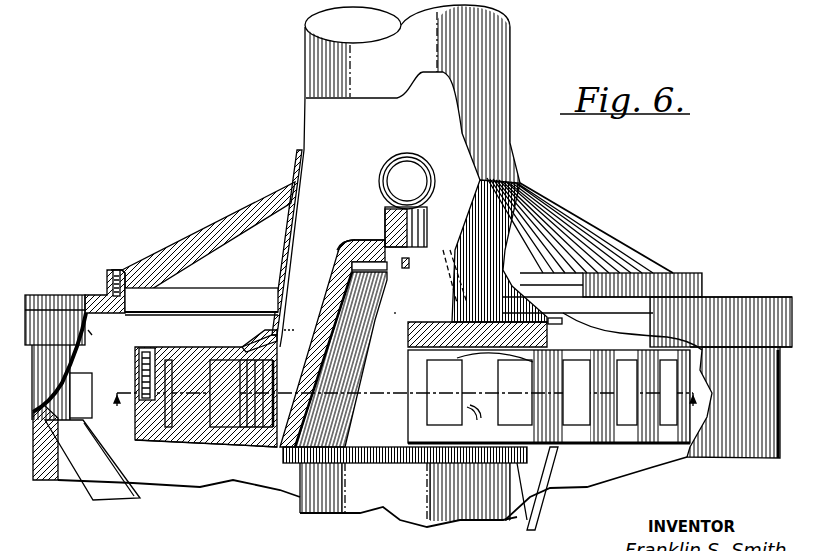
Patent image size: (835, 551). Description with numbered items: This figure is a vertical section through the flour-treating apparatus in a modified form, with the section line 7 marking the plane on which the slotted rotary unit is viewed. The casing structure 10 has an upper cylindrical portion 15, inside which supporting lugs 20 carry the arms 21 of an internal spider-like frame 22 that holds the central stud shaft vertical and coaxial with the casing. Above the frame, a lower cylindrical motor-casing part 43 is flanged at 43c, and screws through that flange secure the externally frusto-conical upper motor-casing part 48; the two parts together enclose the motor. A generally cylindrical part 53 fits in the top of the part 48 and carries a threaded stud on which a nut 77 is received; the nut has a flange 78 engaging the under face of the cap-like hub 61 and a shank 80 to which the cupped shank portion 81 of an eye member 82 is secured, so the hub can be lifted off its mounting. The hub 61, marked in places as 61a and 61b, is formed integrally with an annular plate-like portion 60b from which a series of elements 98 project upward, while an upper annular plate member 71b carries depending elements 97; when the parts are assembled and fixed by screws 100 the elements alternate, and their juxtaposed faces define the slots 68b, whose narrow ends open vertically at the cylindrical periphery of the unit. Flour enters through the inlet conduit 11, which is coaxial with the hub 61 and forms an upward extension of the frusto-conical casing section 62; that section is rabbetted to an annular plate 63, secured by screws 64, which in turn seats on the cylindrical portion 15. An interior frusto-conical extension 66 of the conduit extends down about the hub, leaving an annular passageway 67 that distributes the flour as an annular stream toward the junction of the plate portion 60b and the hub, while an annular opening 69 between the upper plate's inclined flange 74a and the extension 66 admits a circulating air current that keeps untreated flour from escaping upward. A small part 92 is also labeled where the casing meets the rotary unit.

The section line 7- 7 is at (402, 414).
The casing structure 10 is at (747, 297).
The inlet conduit 11 is at (511, 62).
The upper cylindrical portion 15 is at (797, 363).
The supporting lugs 20 is at (97, 348).
The arms 21 is at (113, 502).
The internal spider-like frame 22 is at (143, 500).
The cylindrical part 43 is at (383, 510).
The flange 43c is at (282, 453).
The frusto-conical part 48 is at (395, 312).
The generally cylindrical part 53 is at (407, 263).
The annular plate-like portion 60b is at (208, 438).
The cap-like hub 61 is at (322, 307).
The body lower edge 61a is at (268, 448).
The body upper portion 61b is at (343, 280).
The frusto-conical casing section 62 is at (577, 213).
The annular plate 63 is at (95, 292).
The screws 64 is at (117, 270).
The frusto-conical extension 66 is at (287, 258).
The annular passageway 67 is at (296, 321).
The slots 68b is at (483, 405).
The annular opening 69 is at (272, 300).
The upper annular plate member 71b is at (220, 350).
The cover plate 74a is at (250, 330).
The nut 77 is at (375, 245).
The flange 78 is at (385, 271).
The shank 80 is at (408, 232).
The cupped shank portion 81 is at (428, 217).
The eye member 82 is at (432, 181).
The gasket 92 is at (88, 335).
The elements 97 is at (513, 383).
The elements 98 is at (425, 375).
The screws 100 is at (145, 348).